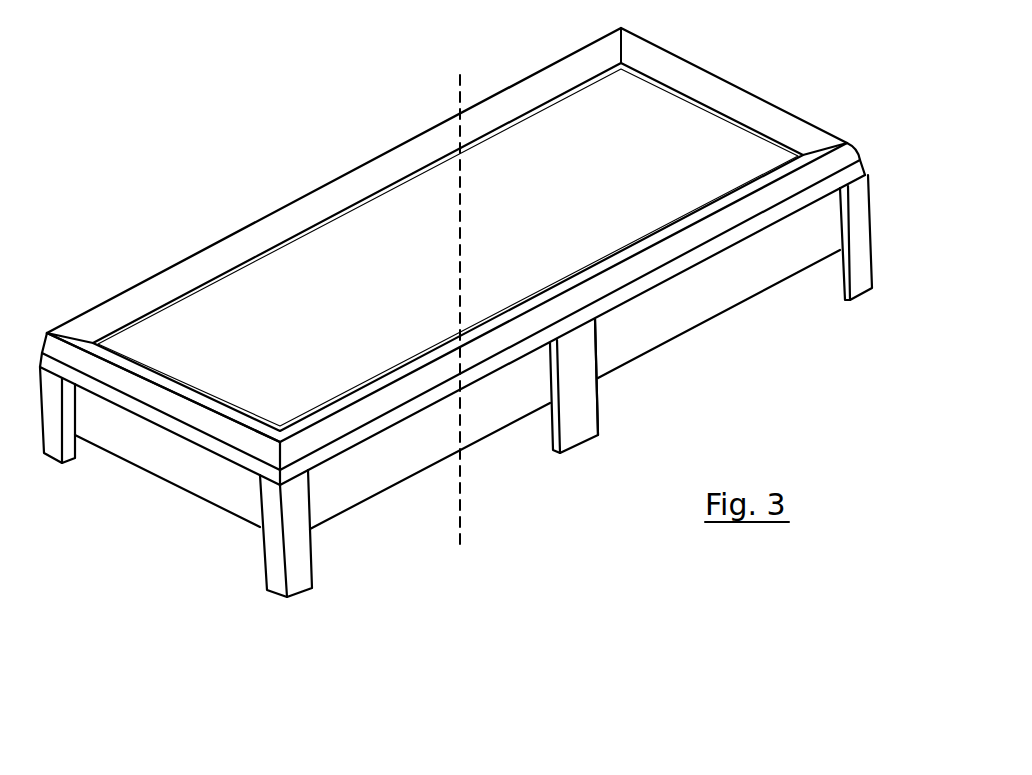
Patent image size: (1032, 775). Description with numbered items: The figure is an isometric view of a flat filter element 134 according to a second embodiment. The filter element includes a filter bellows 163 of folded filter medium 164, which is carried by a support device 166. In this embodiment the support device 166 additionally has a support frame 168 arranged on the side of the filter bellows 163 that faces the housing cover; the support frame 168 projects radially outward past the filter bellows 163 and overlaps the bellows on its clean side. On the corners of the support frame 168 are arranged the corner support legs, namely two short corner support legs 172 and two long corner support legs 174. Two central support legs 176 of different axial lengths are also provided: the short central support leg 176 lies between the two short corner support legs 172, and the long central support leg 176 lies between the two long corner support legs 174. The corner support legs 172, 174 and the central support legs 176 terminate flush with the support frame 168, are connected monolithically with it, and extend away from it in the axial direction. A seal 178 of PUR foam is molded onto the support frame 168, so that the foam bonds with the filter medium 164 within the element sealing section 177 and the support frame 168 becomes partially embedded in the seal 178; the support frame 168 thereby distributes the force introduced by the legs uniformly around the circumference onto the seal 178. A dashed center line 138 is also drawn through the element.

The flat filter element 134 is at (218, 198).
The center line 138 is at (458, 289).
The filter bellows 163 is at (190, 328).
The filter medium 164 is at (688, 297).
The support device 166 is at (597, 384).
The support frame 168 is at (862, 168).
The short corner support leg 172 is at (55, 445).
The long corner support leg 174 is at (300, 543).
The central support leg 176 is at (575, 412).
The element sealing section 177 is at (698, 120).
The seal 178 is at (358, 183).